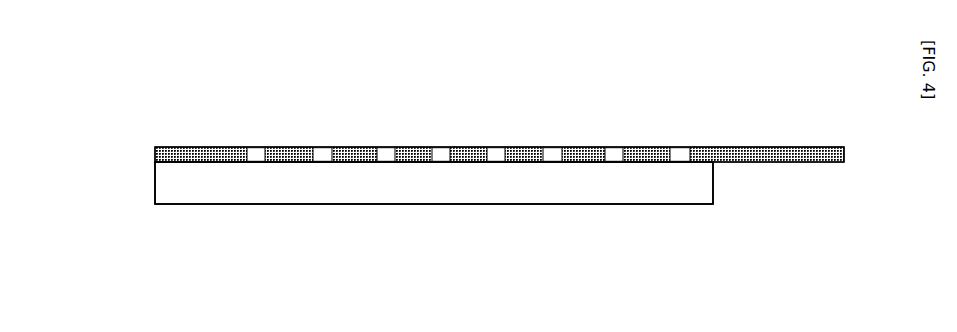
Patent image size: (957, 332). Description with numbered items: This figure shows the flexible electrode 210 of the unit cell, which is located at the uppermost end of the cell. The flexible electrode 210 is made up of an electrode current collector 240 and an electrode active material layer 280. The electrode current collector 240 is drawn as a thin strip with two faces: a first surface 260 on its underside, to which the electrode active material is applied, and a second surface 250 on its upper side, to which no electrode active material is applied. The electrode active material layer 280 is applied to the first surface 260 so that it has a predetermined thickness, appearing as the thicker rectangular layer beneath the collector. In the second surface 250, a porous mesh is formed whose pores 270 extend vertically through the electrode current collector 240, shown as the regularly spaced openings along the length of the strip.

The flexible electrode 210 is at (192, 57).
The electrode current collector 240 is at (79, 98).
The second surface 250 is at (170, 147).
The first surface 260 is at (178, 162).
The pores 270 is at (265, 147).
The electrode active material layer 280 is at (218, 205).